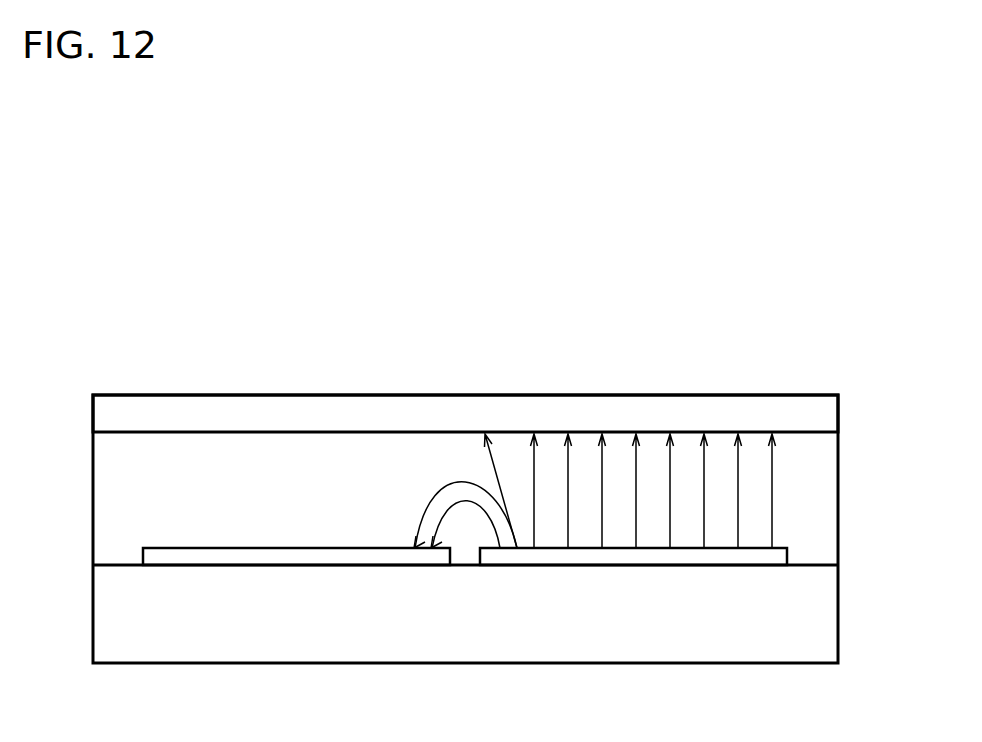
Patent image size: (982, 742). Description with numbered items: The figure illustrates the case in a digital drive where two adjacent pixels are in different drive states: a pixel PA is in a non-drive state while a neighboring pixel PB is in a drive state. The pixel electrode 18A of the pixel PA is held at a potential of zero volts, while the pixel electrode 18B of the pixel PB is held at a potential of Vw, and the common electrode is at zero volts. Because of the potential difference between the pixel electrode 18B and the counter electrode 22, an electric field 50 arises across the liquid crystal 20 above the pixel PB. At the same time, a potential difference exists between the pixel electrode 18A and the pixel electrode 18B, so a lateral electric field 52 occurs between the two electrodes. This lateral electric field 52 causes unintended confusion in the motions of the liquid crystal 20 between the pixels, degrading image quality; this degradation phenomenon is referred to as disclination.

The pixel electrode 18A is at (193, 557).
The pixel electrode 18B is at (747, 558).
The liquid crystal 20 is at (828, 526).
The counter electrode 22 is at (828, 410).
The electric field 50 is at (772, 480).
The lateral electric field 52 is at (466, 504).
The pixel PA is at (284, 356).
The pixel PB is at (635, 356).